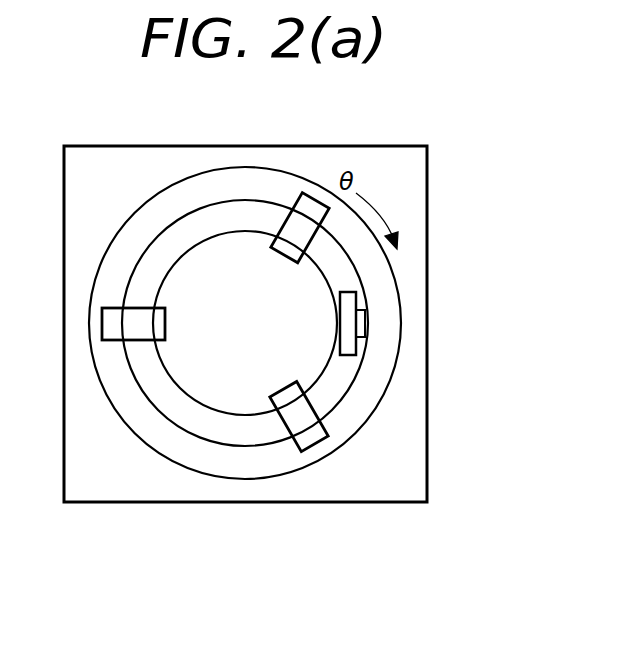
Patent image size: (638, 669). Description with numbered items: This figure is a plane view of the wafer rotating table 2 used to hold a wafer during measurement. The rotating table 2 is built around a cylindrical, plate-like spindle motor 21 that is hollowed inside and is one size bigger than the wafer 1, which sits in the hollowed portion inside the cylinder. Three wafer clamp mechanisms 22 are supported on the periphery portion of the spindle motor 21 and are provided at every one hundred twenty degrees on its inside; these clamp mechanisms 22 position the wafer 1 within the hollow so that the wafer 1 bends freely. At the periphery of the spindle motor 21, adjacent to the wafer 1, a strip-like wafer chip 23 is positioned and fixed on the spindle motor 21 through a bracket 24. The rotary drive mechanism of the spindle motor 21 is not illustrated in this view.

The wafer 1 is at (183, 372).
The rotating table 2 is at (452, 163).
The spindle motor 21 is at (133, 233).
The wafer clamp mechanism 22 is at (115, 323).
The wafer chip 23 is at (352, 342).
The bracket 24 is at (362, 322).